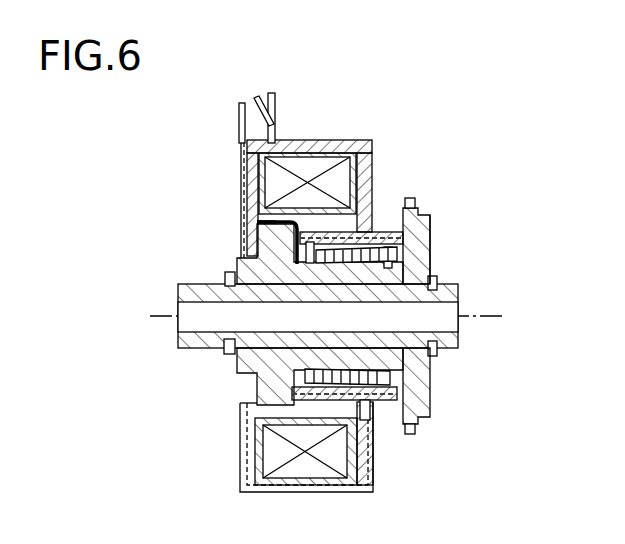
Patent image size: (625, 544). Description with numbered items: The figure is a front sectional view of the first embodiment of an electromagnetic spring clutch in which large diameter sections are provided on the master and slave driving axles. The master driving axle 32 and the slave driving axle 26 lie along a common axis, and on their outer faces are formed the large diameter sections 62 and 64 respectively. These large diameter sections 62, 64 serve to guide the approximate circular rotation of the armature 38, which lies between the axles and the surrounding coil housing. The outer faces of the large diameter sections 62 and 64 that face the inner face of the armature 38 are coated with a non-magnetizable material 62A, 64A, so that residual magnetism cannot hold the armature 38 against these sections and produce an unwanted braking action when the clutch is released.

The slave driving axle 26 is at (178, 291).
The master driving axle 32 is at (432, 238).
The armature 38 is at (384, 231).
The large diameter section 62 is at (406, 254).
The non-magnetizable material 62A is at (407, 220).
The large diameter section 64 is at (296, 264).
The non-magnetizable material 64A is at (256, 222).